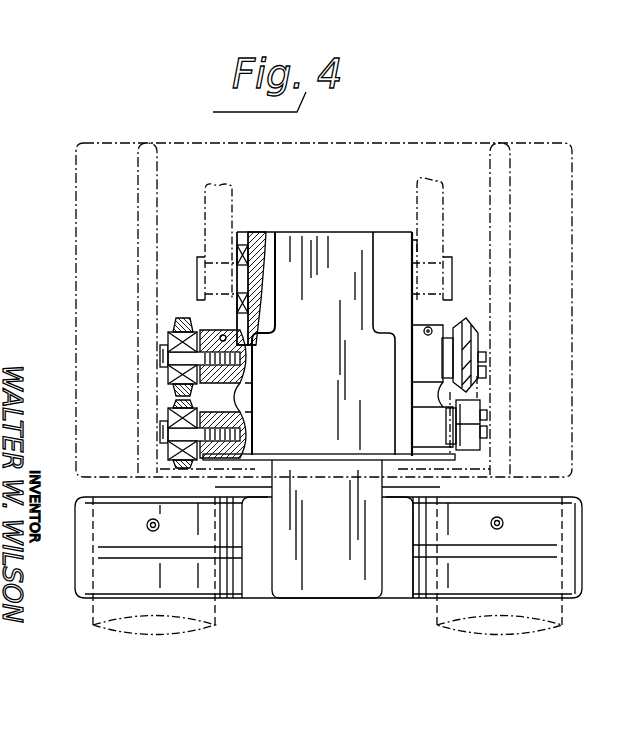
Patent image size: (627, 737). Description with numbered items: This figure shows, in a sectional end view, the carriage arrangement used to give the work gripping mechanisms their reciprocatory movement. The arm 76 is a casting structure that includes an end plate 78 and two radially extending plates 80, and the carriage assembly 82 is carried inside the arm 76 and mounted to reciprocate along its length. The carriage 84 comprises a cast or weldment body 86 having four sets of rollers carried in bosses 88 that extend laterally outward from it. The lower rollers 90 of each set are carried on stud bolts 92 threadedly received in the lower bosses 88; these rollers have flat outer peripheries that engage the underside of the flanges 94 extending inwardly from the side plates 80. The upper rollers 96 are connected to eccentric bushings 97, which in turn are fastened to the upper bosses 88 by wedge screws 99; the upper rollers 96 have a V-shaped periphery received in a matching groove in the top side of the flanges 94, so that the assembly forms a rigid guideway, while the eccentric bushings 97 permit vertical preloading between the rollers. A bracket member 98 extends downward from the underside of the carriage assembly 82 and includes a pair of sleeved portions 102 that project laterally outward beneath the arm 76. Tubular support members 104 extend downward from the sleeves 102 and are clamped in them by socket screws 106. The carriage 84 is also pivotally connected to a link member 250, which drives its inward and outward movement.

The arm 76 is at (78, 252).
The end plate 78 is at (92, 166).
The radially extending plate 80 is at (148, 345).
The carriage assembly 82 is at (240, 492).
The carriage 84 is at (357, 211).
The body 86 is at (255, 232).
The boss 88 is at (228, 398).
The lower roller 90 is at (185, 473).
The stud bolt 92 is at (166, 429).
The flange 94 is at (167, 399).
The upper roller 96 is at (172, 327).
The eccentric bushing 97 is at (200, 330).
The bracket member 98 is at (362, 600).
The wedge screw 99 is at (223, 335).
The sleeved portion 102 is at (85, 598).
The tubular support member 104 is at (218, 626).
The socket screw 106 is at (147, 527).
The link member 250 is at (207, 200).